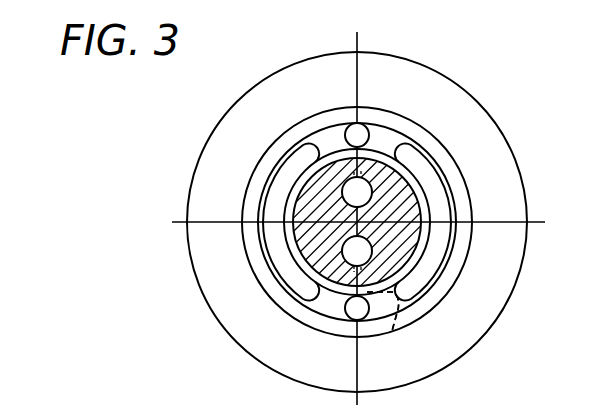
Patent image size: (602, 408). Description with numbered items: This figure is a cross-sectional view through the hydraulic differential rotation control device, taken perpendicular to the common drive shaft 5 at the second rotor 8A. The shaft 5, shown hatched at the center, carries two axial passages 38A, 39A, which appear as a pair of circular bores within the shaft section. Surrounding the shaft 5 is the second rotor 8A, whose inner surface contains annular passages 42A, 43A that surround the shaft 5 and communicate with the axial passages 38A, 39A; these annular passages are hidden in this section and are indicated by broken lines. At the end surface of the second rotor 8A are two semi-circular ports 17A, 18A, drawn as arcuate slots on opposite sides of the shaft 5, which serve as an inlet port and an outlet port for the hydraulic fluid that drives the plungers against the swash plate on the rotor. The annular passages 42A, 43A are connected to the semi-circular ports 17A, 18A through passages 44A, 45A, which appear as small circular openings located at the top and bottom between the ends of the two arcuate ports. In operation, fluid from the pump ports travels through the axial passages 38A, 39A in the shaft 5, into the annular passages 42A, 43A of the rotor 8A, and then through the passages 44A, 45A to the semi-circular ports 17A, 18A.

The second rotor 8A is at (513, 153).
The semi-circular port 17A is at (410, 136).
The semi-circular port 18A is at (305, 294).
The drive shaft 5 is at (342, 162).
The axial passage 38A is at (362, 199).
The axial passage 39A is at (368, 230).
The passage 44A is at (348, 126).
The passage 45A is at (348, 317).
The annular passage 42A is at (392, 331).
The annular passage 43A is at (383, 311).